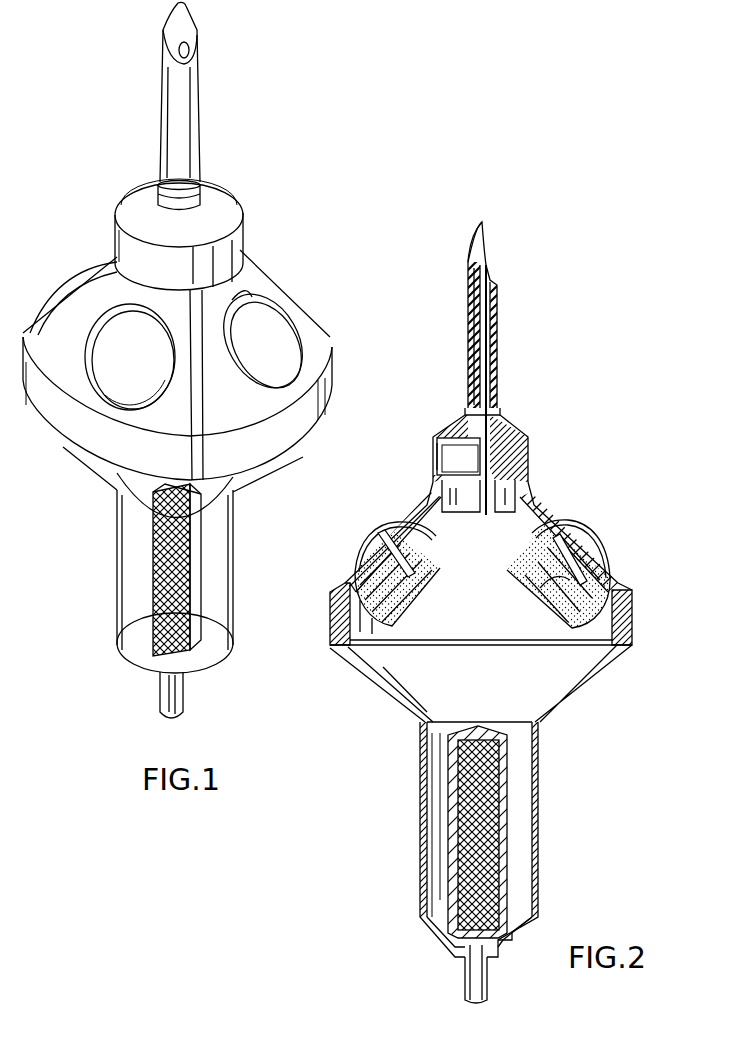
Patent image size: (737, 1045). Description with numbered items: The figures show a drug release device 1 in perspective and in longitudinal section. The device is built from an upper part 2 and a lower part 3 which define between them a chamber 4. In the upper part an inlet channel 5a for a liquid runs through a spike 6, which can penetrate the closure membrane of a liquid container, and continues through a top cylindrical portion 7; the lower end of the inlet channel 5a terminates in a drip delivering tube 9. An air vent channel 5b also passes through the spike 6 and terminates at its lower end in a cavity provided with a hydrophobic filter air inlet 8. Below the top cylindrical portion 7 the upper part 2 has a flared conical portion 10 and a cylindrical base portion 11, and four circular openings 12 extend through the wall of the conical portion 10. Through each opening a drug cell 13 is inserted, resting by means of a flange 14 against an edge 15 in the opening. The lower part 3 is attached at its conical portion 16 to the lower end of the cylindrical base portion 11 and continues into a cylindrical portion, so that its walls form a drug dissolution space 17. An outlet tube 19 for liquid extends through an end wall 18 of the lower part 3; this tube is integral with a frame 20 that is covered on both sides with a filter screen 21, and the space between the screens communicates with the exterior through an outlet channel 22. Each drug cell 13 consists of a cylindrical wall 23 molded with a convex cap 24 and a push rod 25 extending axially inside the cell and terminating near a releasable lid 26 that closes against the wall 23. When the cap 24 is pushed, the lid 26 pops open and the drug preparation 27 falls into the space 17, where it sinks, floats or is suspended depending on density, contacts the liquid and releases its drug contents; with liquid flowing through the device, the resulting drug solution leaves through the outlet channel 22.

In FIG. 1, the drug release device 1 is at (343, 328).
In FIG. 1, the upper part 2 is at (241, 257).
In FIG. 2, the upper part 2 is at (343, 581).
In FIG. 1, the lower part 3 is at (233, 492).
In FIG. 2, the lower part 3 is at (405, 710).
In FIG. 2, the chamber 4 is at (483, 638).
In FIG. 2, the inlet channel 5a is at (488, 357).
In FIG. 2, the air vent channel 5b is at (470, 357).
In FIG. 1, the spike 6 is at (183, 135).
In FIG. 2, the spike 6 is at (497, 345).
In FIG. 2, the top cylindrical portion 7 is at (530, 462).
In FIG. 2, the hydrophobic filter air inlet 8 is at (435, 453).
In FIG. 2, the drip delivering tube 9 is at (482, 520).
In FIG. 1, the flared conical portion 10 is at (303, 316).
In FIG. 2, the flared conical portion 10 is at (422, 508).
In FIG. 1, the cylindrical base portion 11 is at (328, 399).
In FIG. 2, the cylindrical base portion 11 is at (330, 608).
In FIG. 1, the circular openings 12 is at (250, 302).
In FIG. 2, the drug cell 13 is at (527, 540).
In FIG. 2, the flange 14 is at (614, 583).
In FIG. 2, the edge 15 is at (632, 596).
In FIG. 1, the conical portion 16 is at (105, 479).
In FIG. 2, the conical portion 16 is at (572, 686).
In FIG. 2, the drug dissolution space 17 is at (532, 757).
In FIG. 2, the end wall 18 is at (512, 938).
In FIG. 1, the outlet tube 19 is at (185, 699).
In FIG. 2, the outlet tube 19 is at (487, 976).
In FIG. 1, the frame 20 is at (200, 606).
In FIG. 2, the frame 20 is at (505, 864).
In FIG. 1, the filter screen 21 is at (185, 579).
In FIG. 2, the filter screen 21 is at (480, 813).
In FIG. 2, the outlet channel 22 is at (474, 987).
In FIG. 2, the cylindrical wall 23 is at (440, 566).
In FIG. 1, the convex cap 24 is at (258, 346).
In FIG. 2, the convex cap 24 is at (573, 527).
In FIG. 2, the push rod 25 is at (525, 593).
In FIG. 2, the releasable lid 26 is at (405, 611).
In FIG. 2, the drug preparation 27 is at (566, 616).